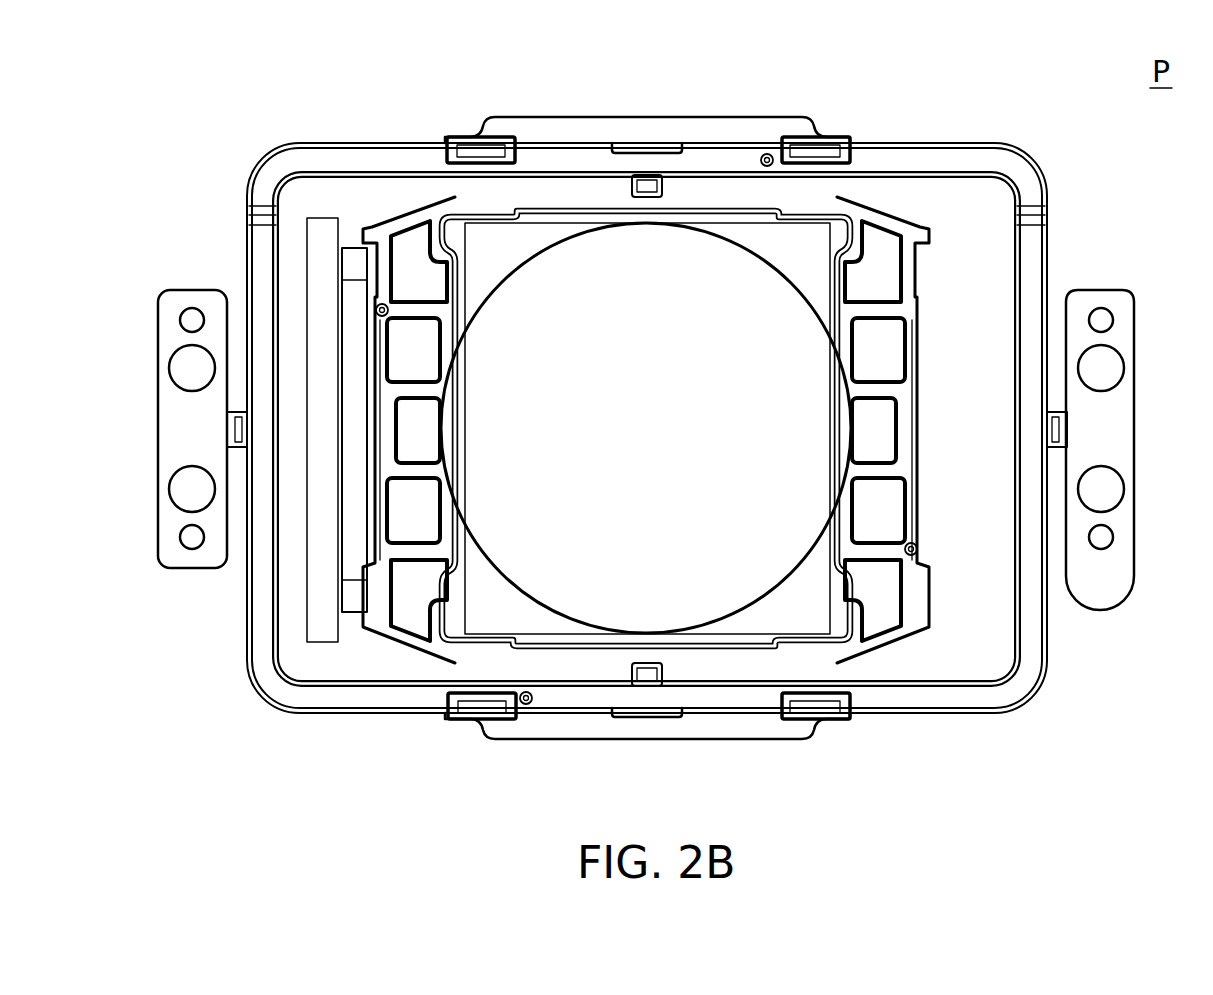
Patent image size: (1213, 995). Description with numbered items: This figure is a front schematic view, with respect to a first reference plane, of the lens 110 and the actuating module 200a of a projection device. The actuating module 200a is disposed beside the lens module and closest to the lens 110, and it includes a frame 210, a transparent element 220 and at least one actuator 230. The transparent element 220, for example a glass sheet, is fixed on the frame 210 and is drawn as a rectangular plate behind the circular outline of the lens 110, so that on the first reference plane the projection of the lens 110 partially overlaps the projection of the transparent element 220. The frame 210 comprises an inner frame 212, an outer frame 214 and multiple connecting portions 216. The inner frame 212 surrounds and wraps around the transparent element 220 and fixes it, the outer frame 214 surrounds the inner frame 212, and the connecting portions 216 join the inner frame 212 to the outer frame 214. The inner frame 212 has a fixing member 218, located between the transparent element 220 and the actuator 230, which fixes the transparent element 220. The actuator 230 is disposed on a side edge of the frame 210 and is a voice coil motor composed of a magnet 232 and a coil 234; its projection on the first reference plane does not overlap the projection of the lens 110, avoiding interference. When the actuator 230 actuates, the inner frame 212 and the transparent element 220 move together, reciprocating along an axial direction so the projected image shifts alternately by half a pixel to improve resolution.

The lens 110 is at (735, 622).
The actuating module 200a is at (646, 428).
The frame 210 is at (646, 402).
The inner frame 212 is at (594, 205).
The outer frame 214 is at (731, 157).
The connecting portion 216 is at (650, 185).
The fixing member 218 is at (400, 216).
The transparent element 220 is at (804, 245).
The actuator 230 is at (340, 529).
The magnet 232 is at (353, 597).
The coil 234 is at (322, 622).